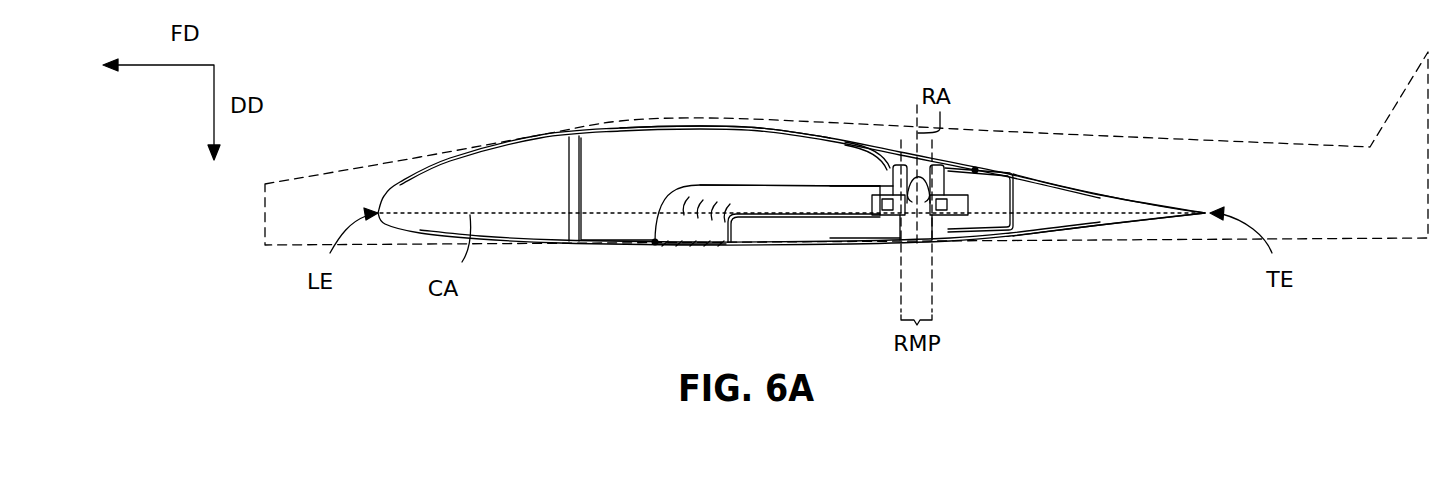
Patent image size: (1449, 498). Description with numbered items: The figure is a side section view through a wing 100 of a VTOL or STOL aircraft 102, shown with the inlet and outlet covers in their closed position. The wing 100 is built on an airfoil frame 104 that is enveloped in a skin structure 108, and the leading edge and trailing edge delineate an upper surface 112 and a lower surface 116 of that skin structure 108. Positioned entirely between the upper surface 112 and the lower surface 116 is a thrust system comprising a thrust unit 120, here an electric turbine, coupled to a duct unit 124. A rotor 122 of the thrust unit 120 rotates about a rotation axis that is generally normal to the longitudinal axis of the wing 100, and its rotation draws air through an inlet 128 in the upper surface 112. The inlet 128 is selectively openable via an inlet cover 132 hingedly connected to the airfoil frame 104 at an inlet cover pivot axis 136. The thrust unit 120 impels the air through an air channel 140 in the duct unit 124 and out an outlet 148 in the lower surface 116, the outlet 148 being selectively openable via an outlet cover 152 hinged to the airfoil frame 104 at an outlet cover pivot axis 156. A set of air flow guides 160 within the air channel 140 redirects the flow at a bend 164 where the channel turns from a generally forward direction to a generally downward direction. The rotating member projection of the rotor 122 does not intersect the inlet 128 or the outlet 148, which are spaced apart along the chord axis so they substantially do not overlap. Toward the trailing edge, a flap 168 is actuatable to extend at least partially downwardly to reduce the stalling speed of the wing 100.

The wing 100 is at (768, 186).
The aircraft 102 is at (1310, 146).
The airfoil frame 104 is at (574, 160).
The skin structure 108 is at (503, 145).
The upper surface 112 is at (711, 115).
The lower surface 116 is at (516, 258).
The thrust unit 120 is at (936, 206).
The rotor 122 is at (927, 215).
The duct unit 124 is at (755, 185).
The inlet 128 is at (897, 150).
The inlet cover 132 is at (940, 170).
The inlet cover pivot axis 136 is at (980, 168).
The air channel 140 is at (847, 220).
The outlet 148 is at (696, 256).
The outlet cover 152 is at (678, 245).
The outlet cover pivot axis 156 is at (651, 244).
The air flow guides 160 is at (740, 222).
The bend 164 is at (670, 176).
The flap 168 is at (1140, 205).